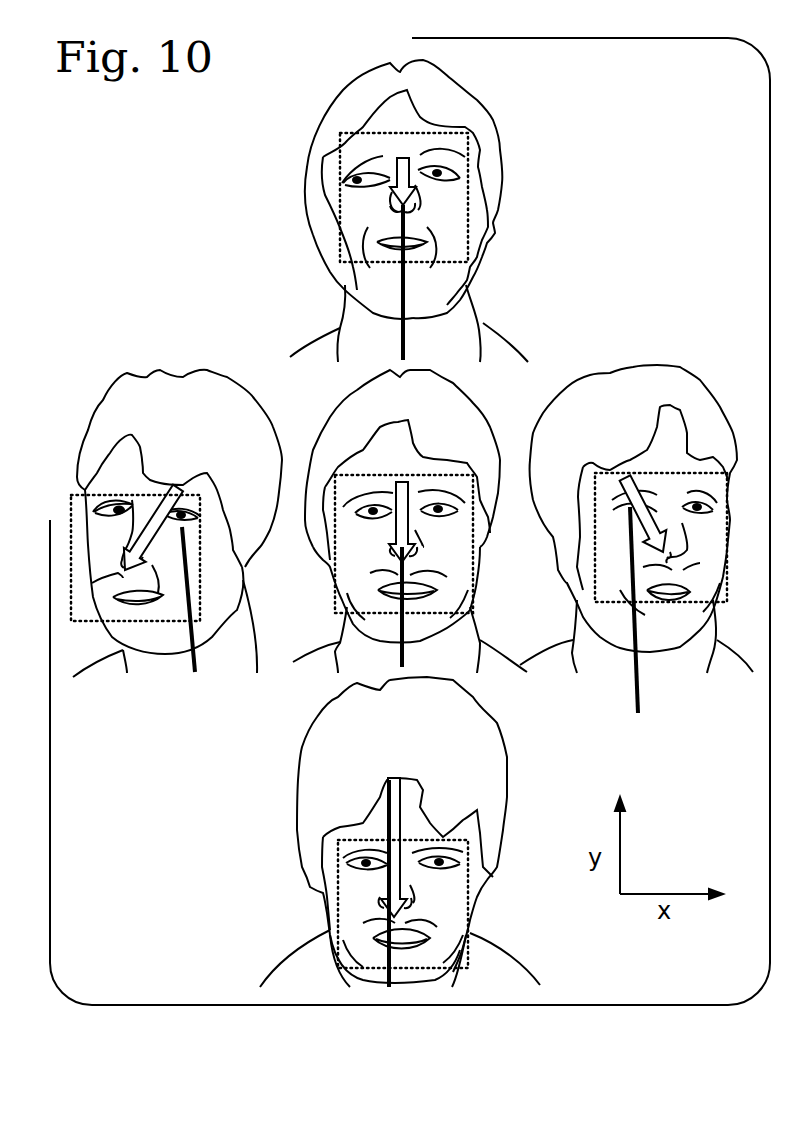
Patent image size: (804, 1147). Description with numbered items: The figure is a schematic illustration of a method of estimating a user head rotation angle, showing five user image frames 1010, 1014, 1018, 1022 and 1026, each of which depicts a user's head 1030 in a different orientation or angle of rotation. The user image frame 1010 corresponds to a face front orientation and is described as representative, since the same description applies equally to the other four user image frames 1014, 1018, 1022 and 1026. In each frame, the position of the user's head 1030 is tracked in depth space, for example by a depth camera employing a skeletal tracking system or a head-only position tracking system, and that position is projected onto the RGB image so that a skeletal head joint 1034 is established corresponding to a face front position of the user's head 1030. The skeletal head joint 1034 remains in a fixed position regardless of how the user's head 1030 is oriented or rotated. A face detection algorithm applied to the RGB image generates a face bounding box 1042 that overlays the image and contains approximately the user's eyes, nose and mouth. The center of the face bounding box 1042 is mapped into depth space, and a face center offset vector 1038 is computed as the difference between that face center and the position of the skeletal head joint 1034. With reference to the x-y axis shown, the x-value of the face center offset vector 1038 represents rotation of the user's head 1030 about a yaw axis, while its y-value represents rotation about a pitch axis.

The user image frame 1010 is at (308, 410).
The user image frame 1014 is at (672, 680).
The user image frame 1018 is at (152, 682).
The user image frame 1022 is at (517, 233).
The user image frame 1026 is at (263, 845).
The user's head 1030 is at (460, 102).
The skeletal head joint 1034 is at (413, 343).
The face center offset vector 1038 is at (393, 178).
The face bounding box 1042 is at (483, 562).